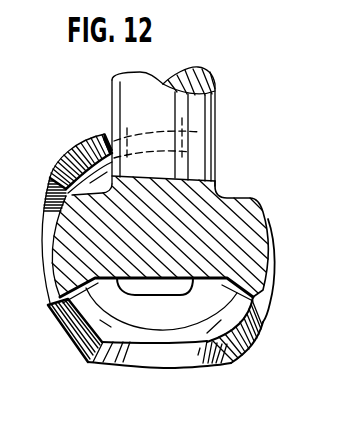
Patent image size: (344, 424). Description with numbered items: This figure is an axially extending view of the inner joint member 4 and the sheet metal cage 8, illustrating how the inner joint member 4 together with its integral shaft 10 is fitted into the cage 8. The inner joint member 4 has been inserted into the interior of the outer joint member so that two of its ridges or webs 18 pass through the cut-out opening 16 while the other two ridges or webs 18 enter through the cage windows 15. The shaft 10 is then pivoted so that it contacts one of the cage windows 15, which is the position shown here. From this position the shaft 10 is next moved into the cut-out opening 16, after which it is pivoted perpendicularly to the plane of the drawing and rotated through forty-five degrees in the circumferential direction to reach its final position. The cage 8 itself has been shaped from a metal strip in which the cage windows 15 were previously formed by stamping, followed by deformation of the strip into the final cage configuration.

The shaft 10 is at (206, 108).
The inner joint member 4 is at (242, 208).
The opening 16 is at (267, 219).
The ridges or webs 18 is at (257, 267).
The cage windows 15 is at (262, 302).
The cage 8 is at (209, 365).